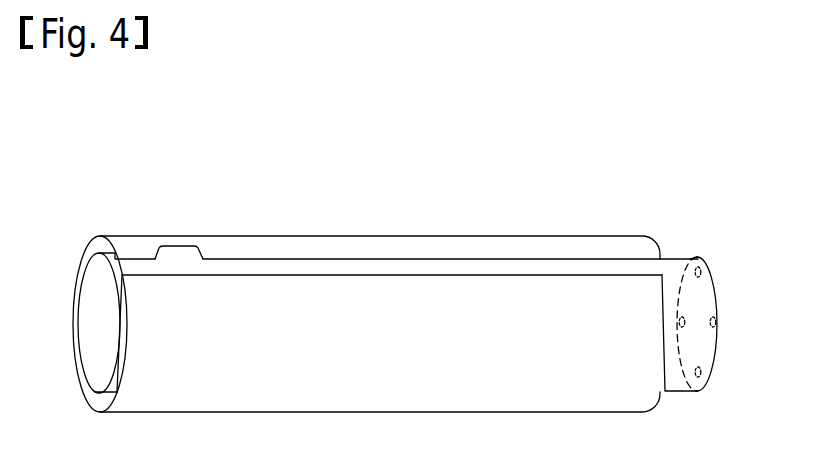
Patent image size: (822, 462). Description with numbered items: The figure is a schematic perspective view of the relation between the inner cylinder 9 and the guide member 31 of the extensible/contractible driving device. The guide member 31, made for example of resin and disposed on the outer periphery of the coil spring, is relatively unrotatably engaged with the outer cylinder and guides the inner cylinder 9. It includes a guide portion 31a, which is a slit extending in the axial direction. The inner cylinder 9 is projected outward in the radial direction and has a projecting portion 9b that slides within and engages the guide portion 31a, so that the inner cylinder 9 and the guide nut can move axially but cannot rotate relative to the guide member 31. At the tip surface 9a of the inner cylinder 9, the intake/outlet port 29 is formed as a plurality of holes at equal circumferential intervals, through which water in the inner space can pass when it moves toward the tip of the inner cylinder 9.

The inner cylinder 9 is at (682, 240).
The tip surface 9a is at (717, 300).
The projecting portion 9b is at (175, 257).
The intake/outlet port 29 is at (703, 268).
The guide member 31 is at (395, 222).
The guide portion 31a is at (510, 260).